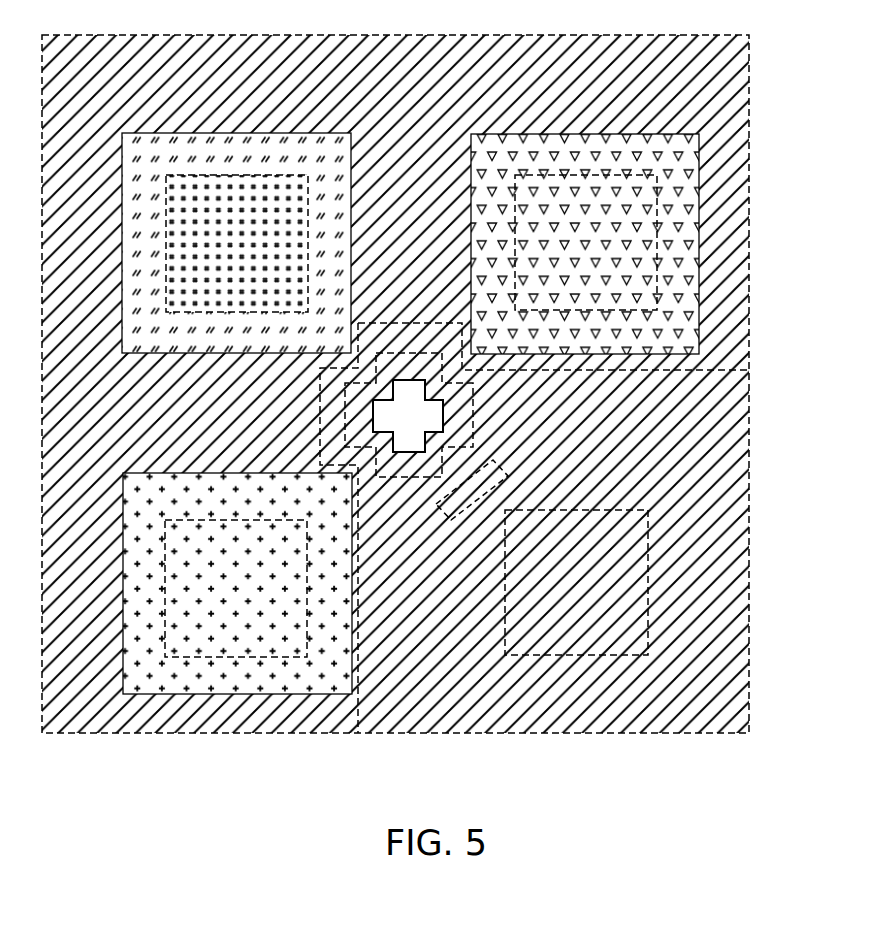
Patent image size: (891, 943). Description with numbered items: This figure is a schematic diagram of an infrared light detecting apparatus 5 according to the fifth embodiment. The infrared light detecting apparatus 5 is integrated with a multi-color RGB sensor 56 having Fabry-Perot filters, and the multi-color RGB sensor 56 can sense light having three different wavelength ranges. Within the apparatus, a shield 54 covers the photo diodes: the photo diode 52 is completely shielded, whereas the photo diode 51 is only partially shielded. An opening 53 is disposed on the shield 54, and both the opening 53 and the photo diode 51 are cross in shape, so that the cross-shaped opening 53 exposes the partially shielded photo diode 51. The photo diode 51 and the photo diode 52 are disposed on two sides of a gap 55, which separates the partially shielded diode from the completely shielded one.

The infrared light detecting apparatus 5 is at (720, 715).
The multi-color RGB sensor 56 is at (749, 87).
The shield 54 is at (703, 450).
The photo diode 51 is at (473, 400).
The opening 53 is at (408, 432).
The gap 55 is at (448, 520).
The photo diode 52 is at (623, 613).